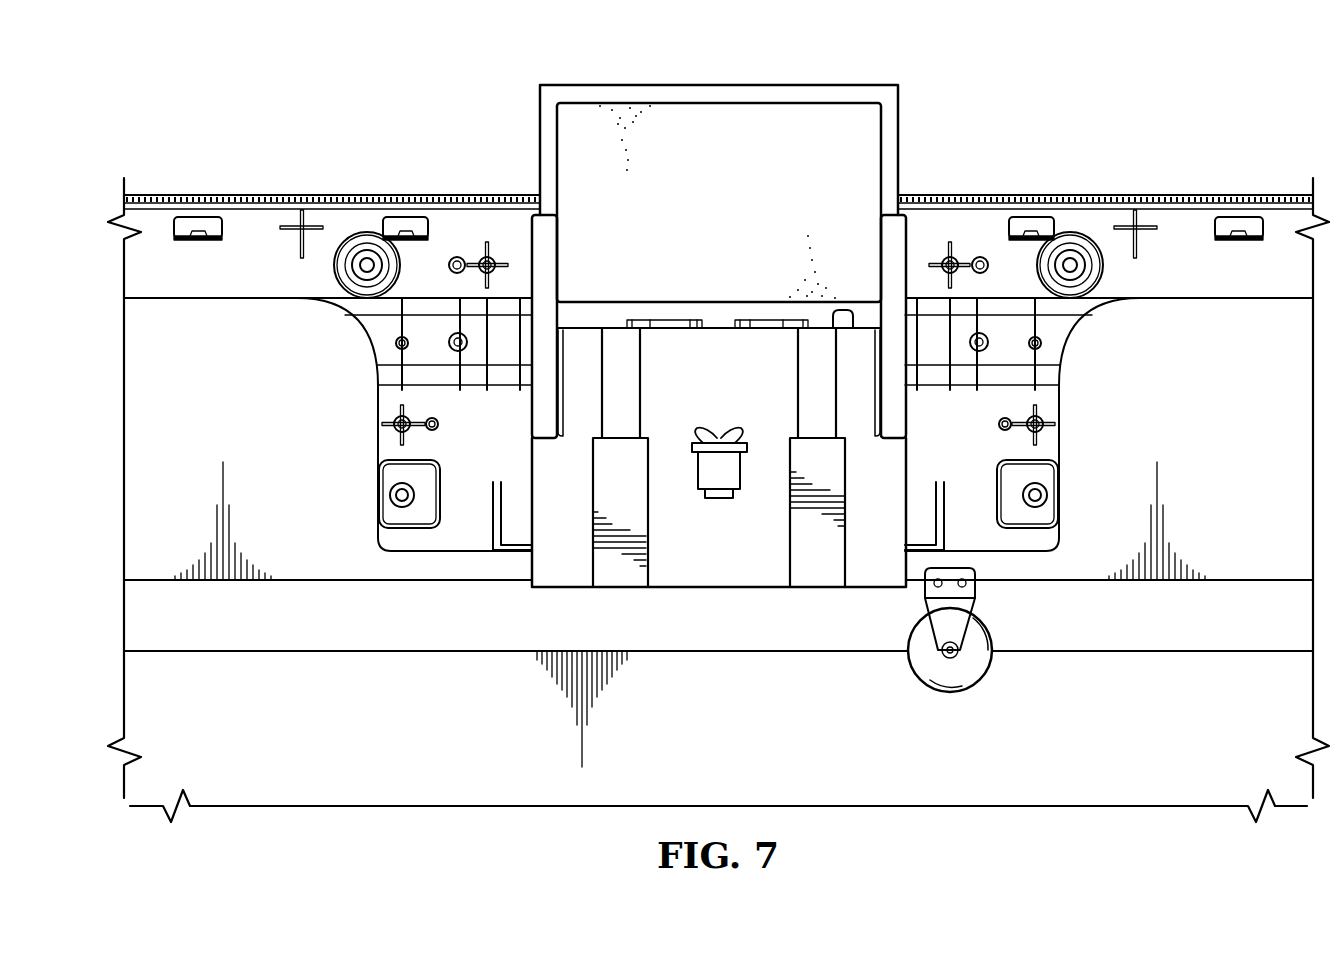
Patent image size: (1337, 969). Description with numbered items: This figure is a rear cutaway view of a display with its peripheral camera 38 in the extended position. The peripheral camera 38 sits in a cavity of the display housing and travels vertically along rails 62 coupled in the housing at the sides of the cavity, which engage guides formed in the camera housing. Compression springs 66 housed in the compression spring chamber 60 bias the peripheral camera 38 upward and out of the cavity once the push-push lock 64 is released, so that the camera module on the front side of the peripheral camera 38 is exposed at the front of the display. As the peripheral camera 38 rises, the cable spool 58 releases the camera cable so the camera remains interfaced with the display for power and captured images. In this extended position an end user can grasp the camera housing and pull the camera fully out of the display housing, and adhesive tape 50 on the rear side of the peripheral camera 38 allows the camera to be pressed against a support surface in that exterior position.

The peripheral camera 38 is at (718, 85).
The adhesive tape 50 is at (703, 217).
The cable spool 58 is at (950, 693).
The compression spring chamber 60 is at (648, 512).
The rails 62 is at (540, 409).
The push-push lock 64 is at (720, 500).
The compression springs 66 is at (640, 383).